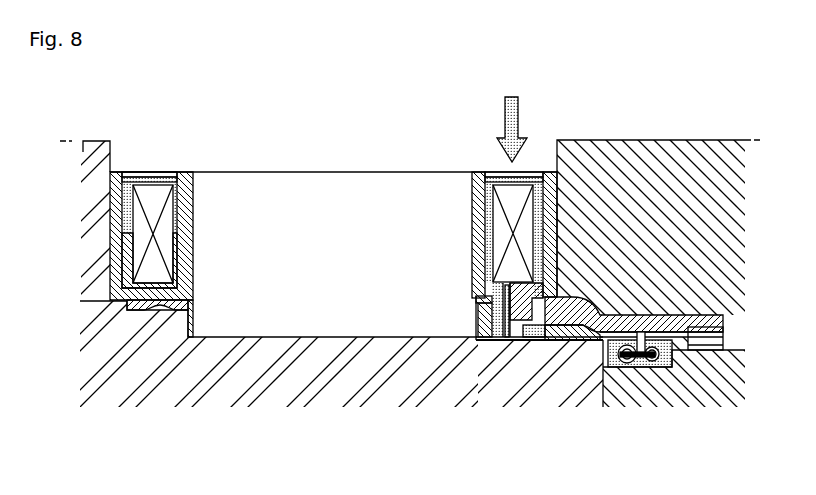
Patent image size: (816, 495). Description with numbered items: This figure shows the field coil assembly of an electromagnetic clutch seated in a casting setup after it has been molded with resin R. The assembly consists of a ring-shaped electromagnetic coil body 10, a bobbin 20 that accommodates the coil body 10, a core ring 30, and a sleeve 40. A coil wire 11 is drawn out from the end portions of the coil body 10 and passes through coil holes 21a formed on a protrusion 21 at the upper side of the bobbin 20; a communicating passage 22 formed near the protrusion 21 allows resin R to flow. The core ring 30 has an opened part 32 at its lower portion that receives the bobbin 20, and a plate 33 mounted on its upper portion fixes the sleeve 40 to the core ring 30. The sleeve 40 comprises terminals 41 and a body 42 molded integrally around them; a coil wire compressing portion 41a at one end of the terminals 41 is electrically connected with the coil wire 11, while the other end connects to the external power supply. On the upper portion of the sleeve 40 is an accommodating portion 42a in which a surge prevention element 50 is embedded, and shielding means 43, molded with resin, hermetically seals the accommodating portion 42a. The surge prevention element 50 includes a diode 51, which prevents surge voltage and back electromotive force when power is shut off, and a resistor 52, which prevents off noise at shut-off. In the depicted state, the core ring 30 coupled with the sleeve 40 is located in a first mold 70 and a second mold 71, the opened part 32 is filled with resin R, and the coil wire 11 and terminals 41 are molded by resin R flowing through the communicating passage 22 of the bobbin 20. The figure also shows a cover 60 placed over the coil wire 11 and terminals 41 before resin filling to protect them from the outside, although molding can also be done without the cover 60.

The electromagnetic coil body 10 is at (140, 258).
The coil wire 11 is at (470, 348).
The bobbin 20 is at (490, 232).
The protrusion 21 is at (490, 264).
The coil holes 21a is at (477, 300).
The communicating passage 22 is at (480, 322).
The core ring 30 is at (117, 228).
The opened part 32 is at (166, 172).
The plate 33 is at (173, 305).
The sleeve 40 is at (674, 310).
The terminals 41 is at (660, 334).
The coil wire compressing portion 41a is at (518, 346).
The body 42 is at (645, 320).
The accommodating portion 42a is at (660, 364).
The shielding means 43 is at (603, 393).
The surge prevention element 50 is at (667, 406).
The diode 51 is at (628, 367).
The resistor 52 is at (655, 367).
The cover 60 is at (540, 346).
The first mold 70 is at (93, 160).
The second mold 71 is at (618, 150).
The resin R is at (538, 180).